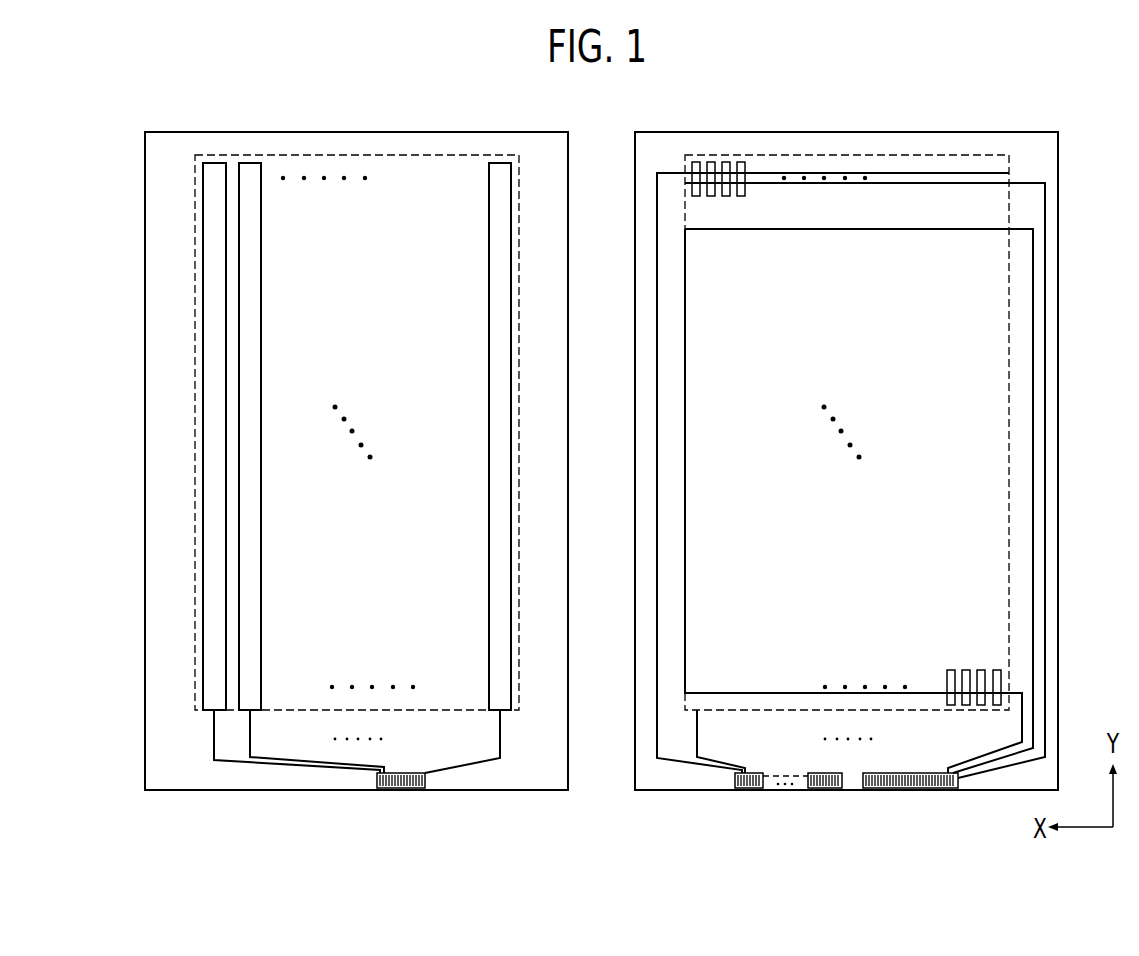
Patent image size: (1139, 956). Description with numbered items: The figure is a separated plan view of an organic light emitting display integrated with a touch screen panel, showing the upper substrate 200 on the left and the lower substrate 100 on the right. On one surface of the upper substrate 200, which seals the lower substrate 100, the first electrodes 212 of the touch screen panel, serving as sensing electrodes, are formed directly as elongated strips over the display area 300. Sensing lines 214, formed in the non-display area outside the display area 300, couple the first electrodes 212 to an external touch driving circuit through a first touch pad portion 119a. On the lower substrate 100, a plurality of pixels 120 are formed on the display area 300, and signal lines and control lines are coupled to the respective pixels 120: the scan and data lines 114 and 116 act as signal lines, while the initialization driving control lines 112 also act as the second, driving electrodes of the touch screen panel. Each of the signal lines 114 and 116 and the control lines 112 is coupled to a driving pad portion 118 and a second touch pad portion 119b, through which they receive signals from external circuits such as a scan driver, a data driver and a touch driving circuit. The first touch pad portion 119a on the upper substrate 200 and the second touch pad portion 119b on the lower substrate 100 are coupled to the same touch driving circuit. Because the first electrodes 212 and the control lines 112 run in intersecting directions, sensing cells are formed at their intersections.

The lower substrate 100 is at (840, 132).
The control lines 112 is at (1027, 183).
The scan lines 114 is at (657, 740).
The data lines 116 is at (697, 738).
The driving pad portion 118 is at (737, 783).
The first touch pad portion 119a is at (377, 780).
The second touch pad portion 119b is at (957, 783).
The pixels 120 is at (725, 162).
The upper substrate 200 is at (350, 132).
The first electrodes 212 is at (215, 163).
The sensing lines 214 is at (250, 737).
The display area 300 is at (443, 155).